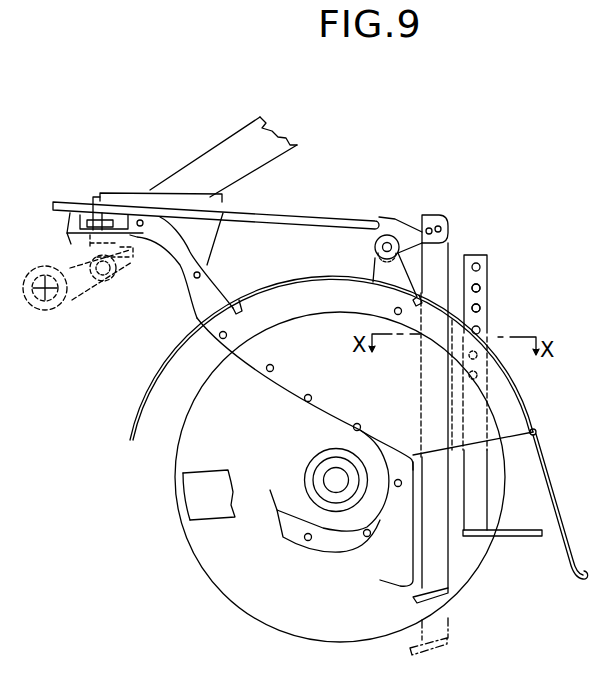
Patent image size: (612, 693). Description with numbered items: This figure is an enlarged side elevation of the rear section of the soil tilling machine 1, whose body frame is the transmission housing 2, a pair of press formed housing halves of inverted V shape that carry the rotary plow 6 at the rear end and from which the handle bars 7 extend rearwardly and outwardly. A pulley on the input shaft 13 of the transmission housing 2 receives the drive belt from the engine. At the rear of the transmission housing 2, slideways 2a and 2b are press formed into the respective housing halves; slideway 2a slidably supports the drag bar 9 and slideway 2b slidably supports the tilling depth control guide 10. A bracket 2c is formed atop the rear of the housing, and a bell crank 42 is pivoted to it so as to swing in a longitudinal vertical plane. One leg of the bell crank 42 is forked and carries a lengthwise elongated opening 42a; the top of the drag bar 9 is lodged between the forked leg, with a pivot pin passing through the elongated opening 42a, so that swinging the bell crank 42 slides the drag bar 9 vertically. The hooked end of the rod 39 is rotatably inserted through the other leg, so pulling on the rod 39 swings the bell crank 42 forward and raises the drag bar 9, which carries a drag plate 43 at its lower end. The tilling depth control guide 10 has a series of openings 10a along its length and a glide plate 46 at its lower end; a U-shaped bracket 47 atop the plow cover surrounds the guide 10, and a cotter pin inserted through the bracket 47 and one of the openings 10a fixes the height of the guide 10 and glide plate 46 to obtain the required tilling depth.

The soil tilling machine 1 is at (429, 114).
The transmission housing 2 is at (216, 278).
The slideway 2a is at (418, 388).
The slideway 2b is at (490, 403).
The bracket 2c is at (373, 266).
The rotary plow 6 is at (364, 633).
The handle bars 7 is at (235, 143).
The drag bar 9 is at (450, 247).
The tilling depth control guide 10 is at (484, 270).
The openings 10a is at (485, 290).
The input shaft 13 is at (55, 297).
The rod 39 is at (305, 216).
The bell crank 42 is at (390, 216).
The elongated opening 42a is at (430, 214).
The drag plate 43 is at (416, 598).
The glide plate 46 is at (526, 537).
The U-shaped bracket 47 is at (488, 311).